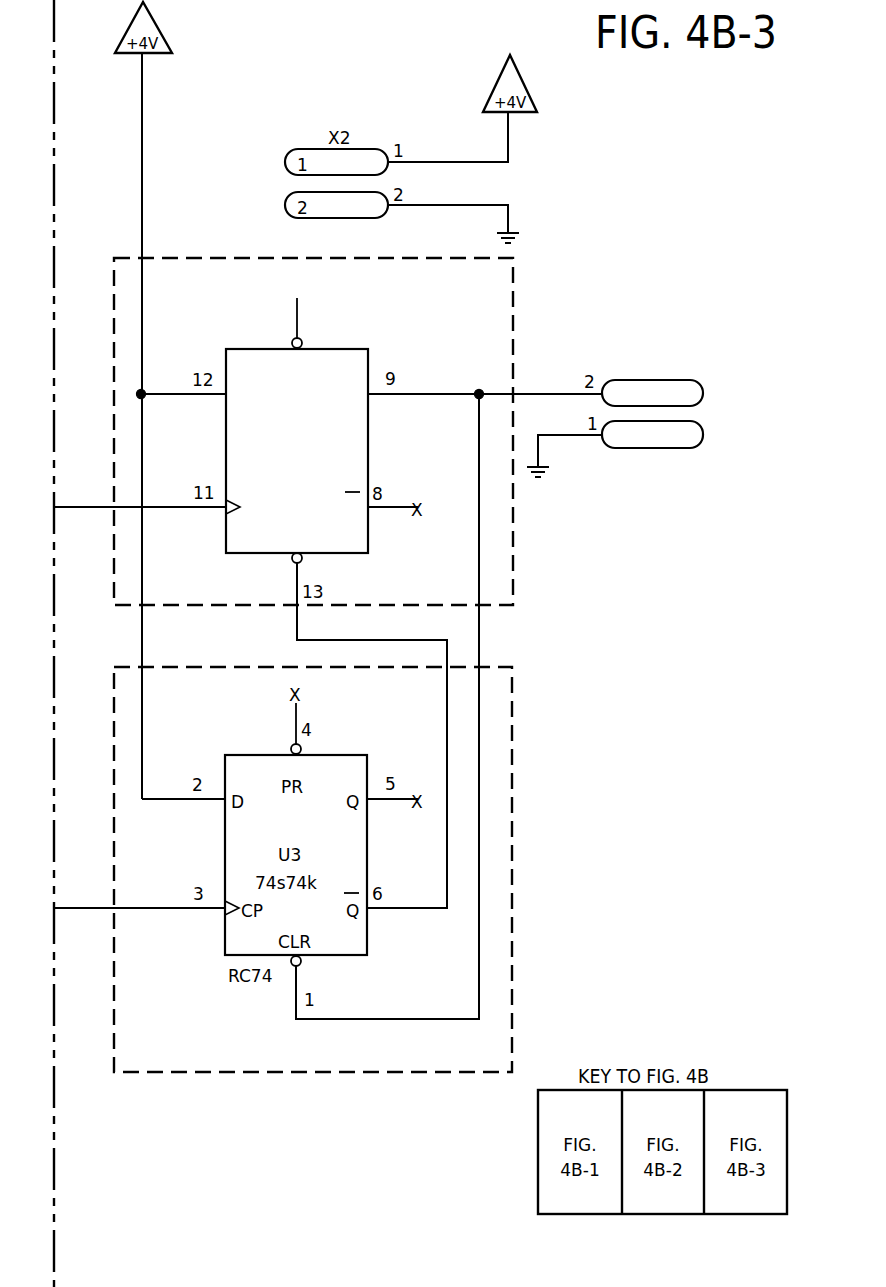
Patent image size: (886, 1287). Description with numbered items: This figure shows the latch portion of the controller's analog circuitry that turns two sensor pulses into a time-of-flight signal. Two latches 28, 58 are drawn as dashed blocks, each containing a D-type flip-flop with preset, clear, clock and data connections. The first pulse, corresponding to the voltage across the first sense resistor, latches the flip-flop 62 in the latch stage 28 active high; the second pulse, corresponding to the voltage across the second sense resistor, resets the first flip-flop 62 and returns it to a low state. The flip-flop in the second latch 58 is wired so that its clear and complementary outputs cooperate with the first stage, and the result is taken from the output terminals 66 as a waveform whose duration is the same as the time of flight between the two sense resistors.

The latch stage 28 is at (513, 345).
The flip-flop 62 is at (345, 349).
The terminals 66 is at (710, 373).
The latch 58 is at (512, 778).